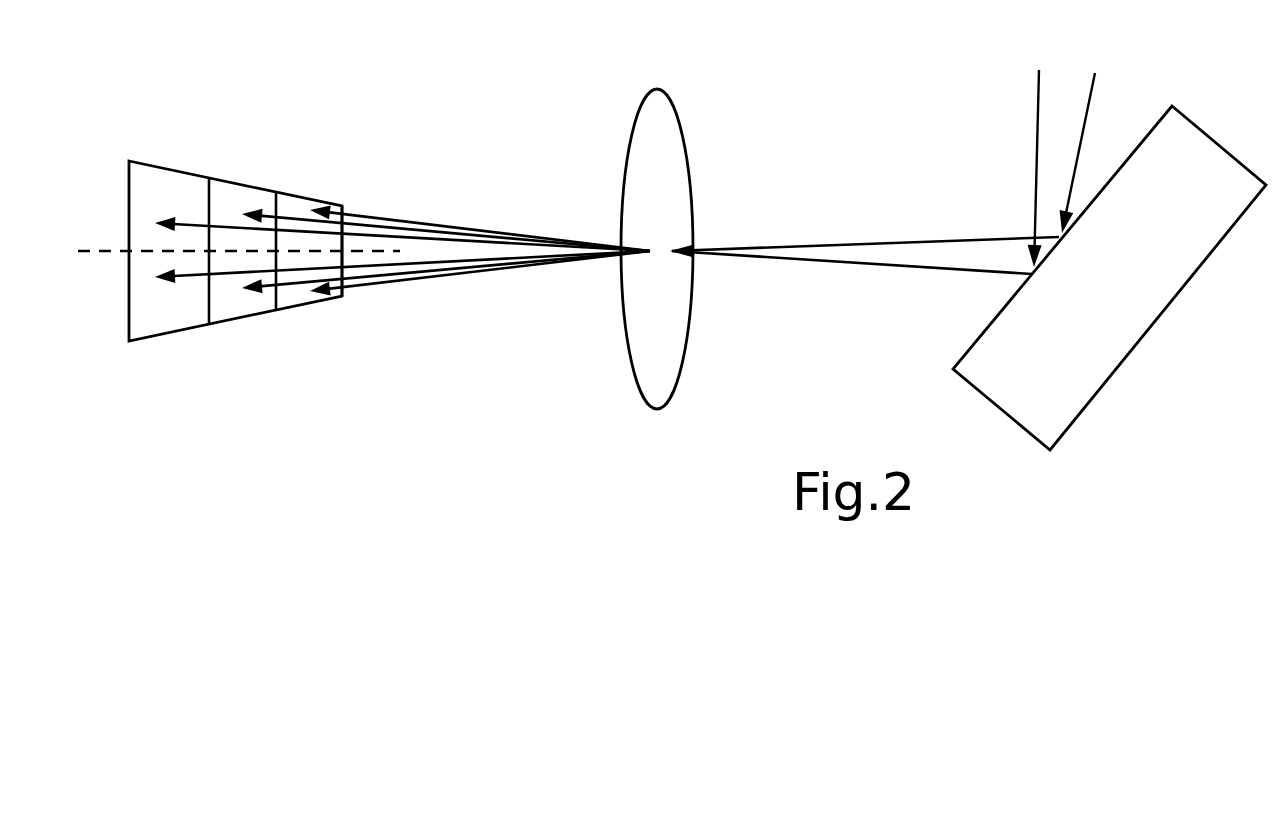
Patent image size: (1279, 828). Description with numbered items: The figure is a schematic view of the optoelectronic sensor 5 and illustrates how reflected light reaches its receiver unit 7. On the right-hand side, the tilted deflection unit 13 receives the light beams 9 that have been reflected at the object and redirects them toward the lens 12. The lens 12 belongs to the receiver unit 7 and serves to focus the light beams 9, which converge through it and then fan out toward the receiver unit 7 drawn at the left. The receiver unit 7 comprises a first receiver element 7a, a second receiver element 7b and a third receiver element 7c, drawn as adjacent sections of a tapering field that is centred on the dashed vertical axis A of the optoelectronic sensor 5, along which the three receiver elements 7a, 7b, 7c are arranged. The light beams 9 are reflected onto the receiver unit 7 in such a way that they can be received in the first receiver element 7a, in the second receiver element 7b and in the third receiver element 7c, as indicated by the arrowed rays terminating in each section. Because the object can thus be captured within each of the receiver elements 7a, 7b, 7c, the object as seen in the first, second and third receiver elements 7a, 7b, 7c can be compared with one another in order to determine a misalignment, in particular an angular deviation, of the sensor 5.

The optoelectronic sensor 5 is at (343, 396).
The receiver unit 7 is at (275, 174).
The first receiver element 7a is at (177, 187).
The second receiver element 7b is at (247, 197).
The third receiver element 7c is at (302, 207).
The light beams 9 is at (857, 245).
The lens 12 is at (664, 90).
The deflection unit 13 is at (1186, 283).
The vertical axis A is at (107, 252).